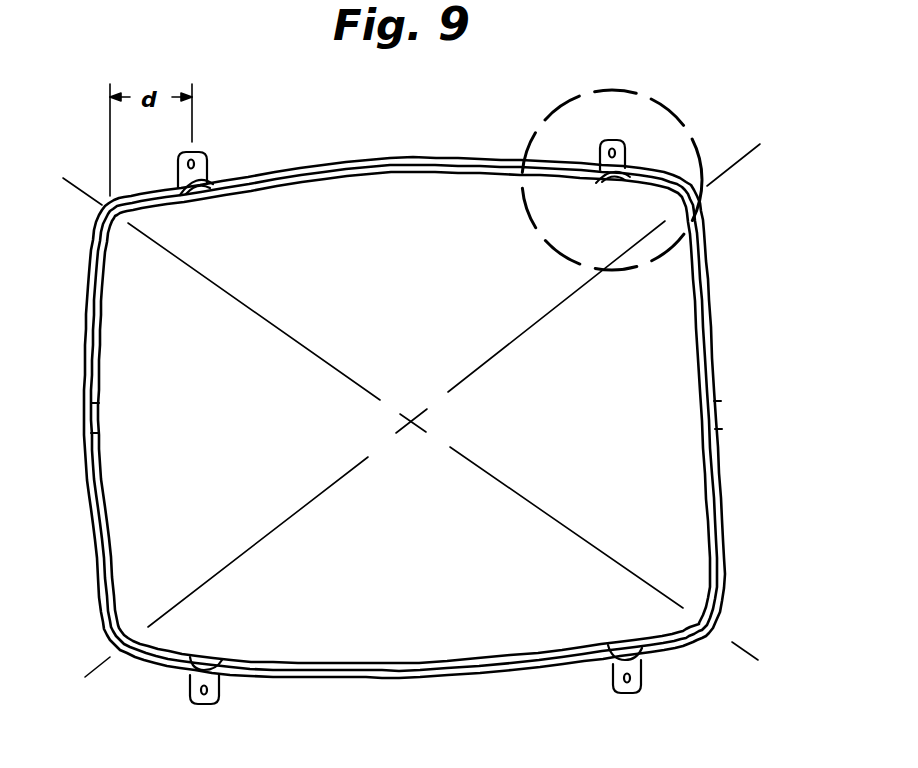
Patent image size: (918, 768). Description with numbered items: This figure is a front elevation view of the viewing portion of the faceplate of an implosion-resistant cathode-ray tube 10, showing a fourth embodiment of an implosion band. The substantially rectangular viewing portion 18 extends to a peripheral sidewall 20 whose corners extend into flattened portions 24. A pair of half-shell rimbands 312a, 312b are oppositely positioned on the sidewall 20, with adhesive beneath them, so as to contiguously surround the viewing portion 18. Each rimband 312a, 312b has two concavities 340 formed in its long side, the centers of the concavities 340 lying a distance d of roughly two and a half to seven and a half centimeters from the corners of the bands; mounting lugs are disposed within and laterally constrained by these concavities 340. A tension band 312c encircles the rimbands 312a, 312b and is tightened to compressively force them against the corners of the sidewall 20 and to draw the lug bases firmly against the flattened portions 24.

The implosion-resistant cathode-ray tube 10 is at (684, 121).
The viewing portion 18 is at (694, 282).
The peripheral sidewall 20 is at (98, 423).
The flattened portions 24 is at (593, 182).
The half-shell rimband 312a is at (716, 342).
The half-shell rimband 312b is at (720, 460).
The tension band 312c is at (732, 410).
The concavities 340 is at (219, 186).